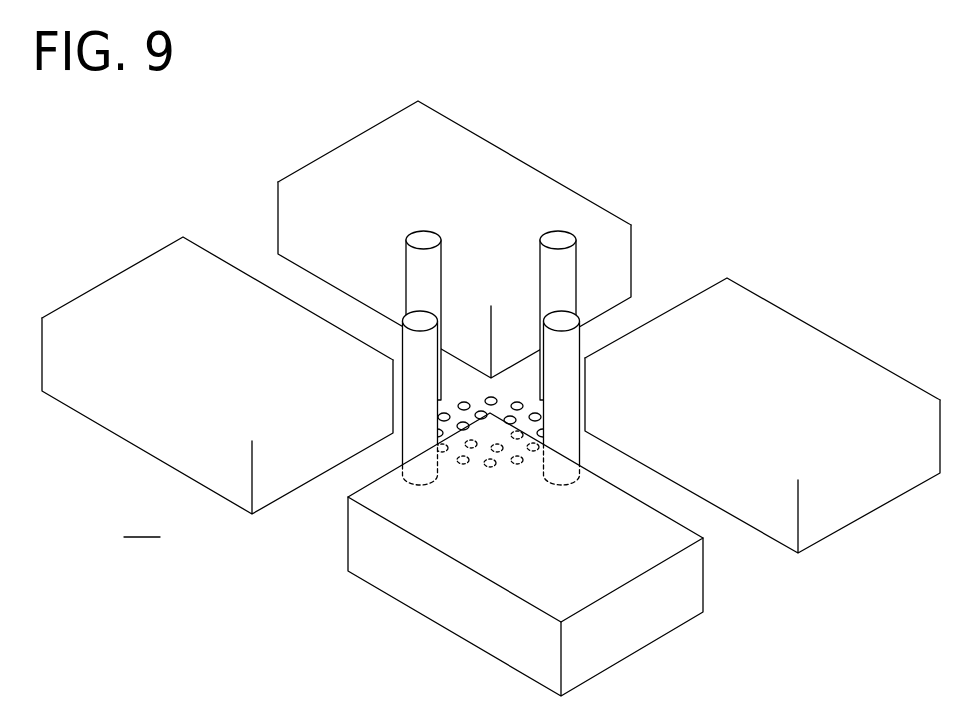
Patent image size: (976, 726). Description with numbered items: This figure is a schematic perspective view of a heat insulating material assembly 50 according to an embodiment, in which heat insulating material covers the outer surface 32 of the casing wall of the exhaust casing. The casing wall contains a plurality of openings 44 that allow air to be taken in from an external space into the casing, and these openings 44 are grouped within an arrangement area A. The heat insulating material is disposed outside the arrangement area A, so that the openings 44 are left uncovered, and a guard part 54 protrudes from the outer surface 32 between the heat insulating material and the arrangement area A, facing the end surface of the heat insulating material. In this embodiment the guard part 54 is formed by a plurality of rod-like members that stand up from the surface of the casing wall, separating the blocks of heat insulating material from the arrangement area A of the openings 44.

The outer surface 32 is at (142, 524).
The openings 44 is at (522, 397).
The heat insulating material assembly 50 is at (778, 233).
The guard part 54 is at (642, 176).
The arrangement area A is at (505, 395).